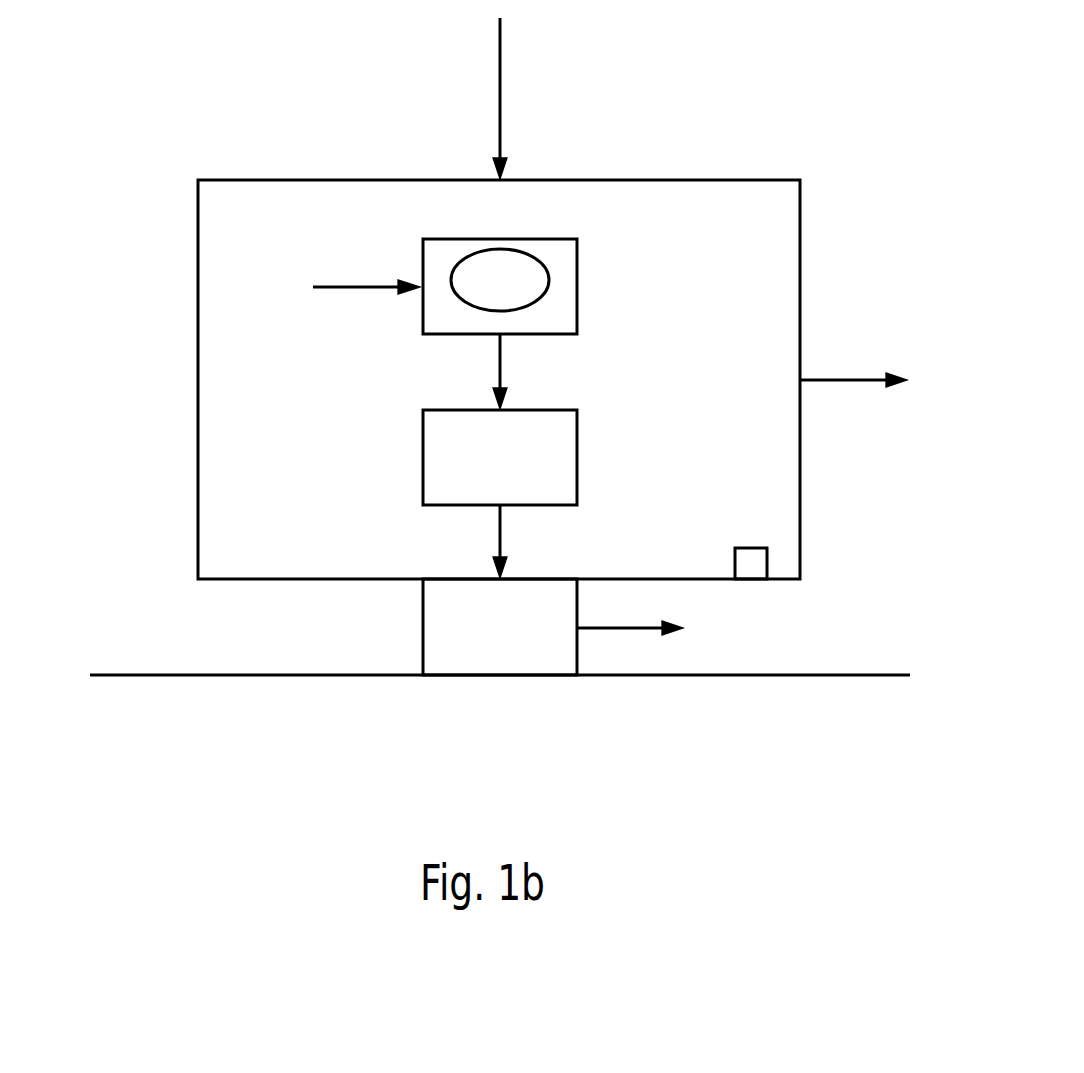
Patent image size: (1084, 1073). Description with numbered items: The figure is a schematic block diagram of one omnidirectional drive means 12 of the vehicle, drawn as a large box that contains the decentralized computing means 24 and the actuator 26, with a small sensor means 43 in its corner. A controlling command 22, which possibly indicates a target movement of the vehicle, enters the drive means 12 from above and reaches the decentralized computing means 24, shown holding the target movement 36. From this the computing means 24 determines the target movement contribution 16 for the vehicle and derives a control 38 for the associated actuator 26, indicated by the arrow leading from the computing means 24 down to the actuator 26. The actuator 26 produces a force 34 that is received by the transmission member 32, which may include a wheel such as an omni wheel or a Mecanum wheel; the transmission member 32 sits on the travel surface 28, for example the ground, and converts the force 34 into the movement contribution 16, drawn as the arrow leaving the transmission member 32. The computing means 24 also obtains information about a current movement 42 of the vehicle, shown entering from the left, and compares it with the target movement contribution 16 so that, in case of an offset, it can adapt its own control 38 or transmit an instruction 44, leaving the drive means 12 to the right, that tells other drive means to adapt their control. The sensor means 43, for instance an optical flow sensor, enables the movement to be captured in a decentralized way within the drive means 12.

The omnidirectional drive means 12 is at (777, 26).
The target movement contribution 16 is at (638, 630).
The controlling command 22 is at (500, 97).
The decentralized computing means 24 is at (577, 318).
The actuator 26 is at (577, 452).
The travel surface 28 is at (353, 676).
The transmission member 32 is at (423, 630).
The force 34 is at (500, 538).
The target movement 36 is at (549, 280).
The control 38 is at (500, 367).
The current movement 42 is at (363, 287).
The sensor means 43 is at (751, 548).
The instruction 44 is at (850, 380).